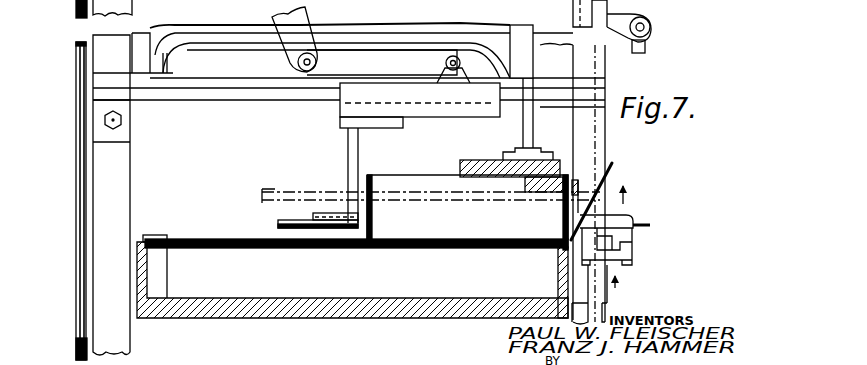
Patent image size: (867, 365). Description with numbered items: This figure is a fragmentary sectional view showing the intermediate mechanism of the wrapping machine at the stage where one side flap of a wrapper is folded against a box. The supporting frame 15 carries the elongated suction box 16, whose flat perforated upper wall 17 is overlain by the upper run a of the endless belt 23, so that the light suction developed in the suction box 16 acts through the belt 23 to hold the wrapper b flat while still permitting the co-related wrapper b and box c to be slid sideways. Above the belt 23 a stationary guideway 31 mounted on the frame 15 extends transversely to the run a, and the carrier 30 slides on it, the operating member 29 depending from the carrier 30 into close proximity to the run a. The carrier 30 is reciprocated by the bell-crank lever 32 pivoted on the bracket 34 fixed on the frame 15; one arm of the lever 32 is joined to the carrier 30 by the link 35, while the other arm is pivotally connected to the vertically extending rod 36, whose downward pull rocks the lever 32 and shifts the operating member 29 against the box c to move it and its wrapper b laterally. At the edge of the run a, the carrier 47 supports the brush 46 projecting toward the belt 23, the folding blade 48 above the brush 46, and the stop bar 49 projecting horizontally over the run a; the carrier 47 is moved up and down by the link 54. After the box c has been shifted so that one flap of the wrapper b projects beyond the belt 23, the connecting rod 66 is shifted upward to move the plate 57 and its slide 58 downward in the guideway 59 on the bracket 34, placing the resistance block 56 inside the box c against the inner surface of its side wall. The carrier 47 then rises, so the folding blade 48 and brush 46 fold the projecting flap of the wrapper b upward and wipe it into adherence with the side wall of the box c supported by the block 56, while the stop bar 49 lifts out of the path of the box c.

The supporting frame 15 is at (110, 186).
The suction box 16 is at (332, 310).
The perforated upper wall 17 is at (253, 252).
The endless belt 23 is at (231, 239).
The operating member 29 is at (370, 222).
The carrier 30 is at (342, 108).
The guideway 31 is at (222, 97).
The bell-crank lever 32 is at (303, 25).
The bracket 34 is at (240, 37).
The link 35 is at (387, 60).
The rod 36 is at (78, 100).
The brush 46 is at (560, 257).
The carrier 47 is at (608, 297).
The folding blade 48 is at (652, 222).
The stop bar 49 is at (295, 189).
The link 54 is at (650, 42).
The resistance block 56 is at (535, 194).
The plate 57 is at (477, 162).
The slide 58 is at (523, 133).
The guideway 59 is at (530, 43).
The connecting rod 66 is at (80, 42).
The upper run a is at (185, 239).
The wrapper b is at (326, 238).
The box c is at (371, 176).